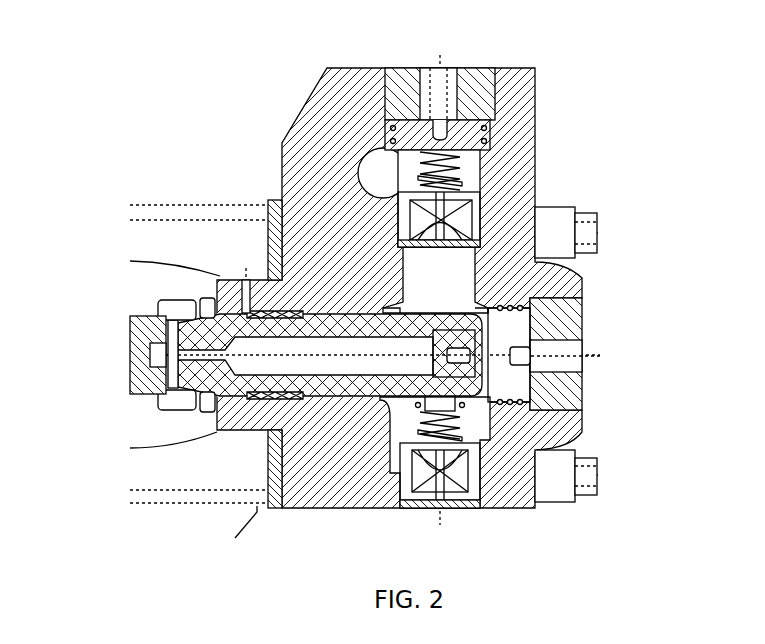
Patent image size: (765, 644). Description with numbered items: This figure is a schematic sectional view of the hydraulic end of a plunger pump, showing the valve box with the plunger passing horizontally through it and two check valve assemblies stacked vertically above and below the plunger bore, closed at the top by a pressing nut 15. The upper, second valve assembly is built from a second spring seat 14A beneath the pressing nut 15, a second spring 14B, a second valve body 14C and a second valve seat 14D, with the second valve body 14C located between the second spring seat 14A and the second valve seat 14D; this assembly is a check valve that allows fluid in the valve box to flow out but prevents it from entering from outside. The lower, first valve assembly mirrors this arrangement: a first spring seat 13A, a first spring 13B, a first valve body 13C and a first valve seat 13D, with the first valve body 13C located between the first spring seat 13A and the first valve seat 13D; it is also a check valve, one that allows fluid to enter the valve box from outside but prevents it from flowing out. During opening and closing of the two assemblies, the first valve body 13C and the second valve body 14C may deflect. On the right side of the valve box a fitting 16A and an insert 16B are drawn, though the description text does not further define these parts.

The pressing nut 15 is at (480, 82).
The second spring seat 14A is at (478, 132).
The second spring 14B is at (453, 173).
The second valve body 14C is at (438, 208).
The second valve seat 14D is at (472, 240).
The fitting 16A is at (547, 315).
The insert 16B is at (513, 375).
The first spring seat 13A is at (445, 407).
The first spring 13B is at (445, 433).
The first valve body 13C is at (440, 450).
The first valve seat 13D is at (472, 482).